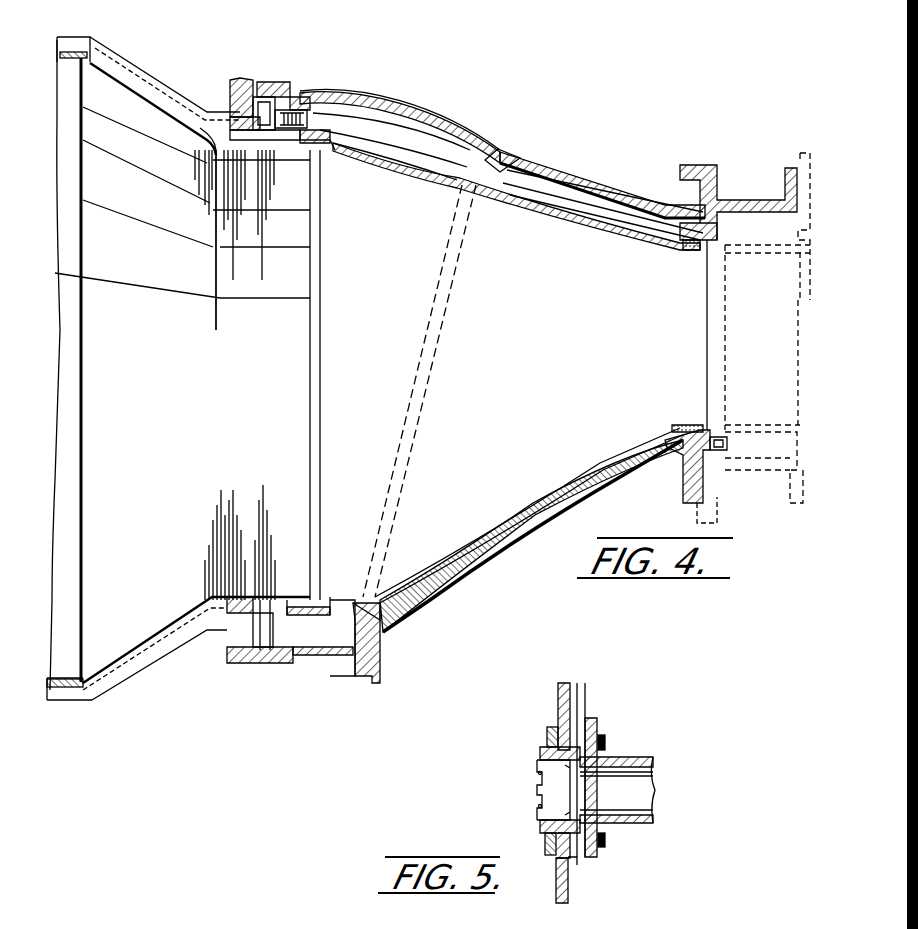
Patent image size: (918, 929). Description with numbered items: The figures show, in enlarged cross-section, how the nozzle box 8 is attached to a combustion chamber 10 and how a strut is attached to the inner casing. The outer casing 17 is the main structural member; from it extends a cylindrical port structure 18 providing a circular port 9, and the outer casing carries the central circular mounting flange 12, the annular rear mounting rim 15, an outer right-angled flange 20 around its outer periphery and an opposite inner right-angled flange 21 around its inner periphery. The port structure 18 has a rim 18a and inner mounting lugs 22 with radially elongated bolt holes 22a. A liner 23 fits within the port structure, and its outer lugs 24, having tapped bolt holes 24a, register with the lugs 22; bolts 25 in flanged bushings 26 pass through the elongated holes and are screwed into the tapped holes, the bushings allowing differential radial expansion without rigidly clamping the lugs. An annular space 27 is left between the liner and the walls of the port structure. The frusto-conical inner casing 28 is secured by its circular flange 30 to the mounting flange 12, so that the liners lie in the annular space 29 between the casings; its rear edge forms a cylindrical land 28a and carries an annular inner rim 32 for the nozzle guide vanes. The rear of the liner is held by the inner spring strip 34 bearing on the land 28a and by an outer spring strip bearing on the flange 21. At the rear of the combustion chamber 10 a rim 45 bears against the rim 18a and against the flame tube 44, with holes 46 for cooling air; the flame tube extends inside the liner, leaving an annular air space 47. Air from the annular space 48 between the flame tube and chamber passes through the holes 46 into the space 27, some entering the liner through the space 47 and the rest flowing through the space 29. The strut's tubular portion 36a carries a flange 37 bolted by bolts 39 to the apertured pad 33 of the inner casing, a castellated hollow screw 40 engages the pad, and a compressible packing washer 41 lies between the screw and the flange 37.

In FIG. 4, the nozzle box assembly 8 is at (455, 621).
In FIG. 4, the circular port 9 is at (268, 397).
In FIG. 4, the combustion chamber 10 is at (143, 76).
In FIG. 4, the circular mounting flange 12 is at (357, 660).
In FIG. 4, the annular rear mounting rim 15 is at (790, 168).
In FIG. 4, the outer casing 17 is at (547, 160).
In FIG. 4, the cylindrical port structure 18 is at (460, 132).
In FIG. 4, the rim 18a is at (239, 88).
In FIG. 4, the outer right-angled flange 20 is at (690, 165).
In FIG. 4, the inner right-angled flange 21 is at (710, 235).
In FIG. 4, the inner mounting lug 22 is at (283, 100).
In FIG. 4, the radially elongated bolt hole 22a is at (300, 105).
In FIG. 4, the liner 23 is at (490, 148).
In FIG. 4, the outer lug 24 is at (330, 97).
In FIG. 4, the tapped bolt hole 24a is at (315, 145).
In FIG. 4, the bolt 25 is at (372, 96).
In FIG. 4, the flanged bushing 26 is at (273, 83).
In FIG. 4, the annular space 27 is at (378, 126).
In FIG. 4, the inner casing 28 is at (497, 543).
In FIG. 5, the inner casing 28 is at (558, 703).
In FIG. 4, the cylindrical land 28a is at (715, 438).
In FIG. 4, the annular space 29 is at (603, 207).
In FIG. 4, the circular flange 30 is at (382, 658).
In FIG. 4, the annular inner rim 32 is at (700, 483).
In FIG. 5, the apertured pad 33 is at (570, 858).
In FIG. 4, the inner circumferential spring strip 34 is at (680, 425).
In FIG. 5, the tubular portion 36a is at (637, 757).
In FIG. 5, the flange 37 is at (597, 720).
In FIG. 5, the bolt 39 is at (605, 741).
In FIG. 5, the castellated hollow screw 40 is at (540, 787).
In FIG. 5, the compressible packing washer 41 is at (580, 727).
In FIG. 4, the flame tube 44 is at (140, 663).
In FIG. 4, the rim 45 is at (230, 100).
In FIG. 4, the hole 46 is at (237, 97).
In FIG. 4, the annular air space 47 is at (300, 603).
In FIG. 4, the annular space 48 is at (93, 693).